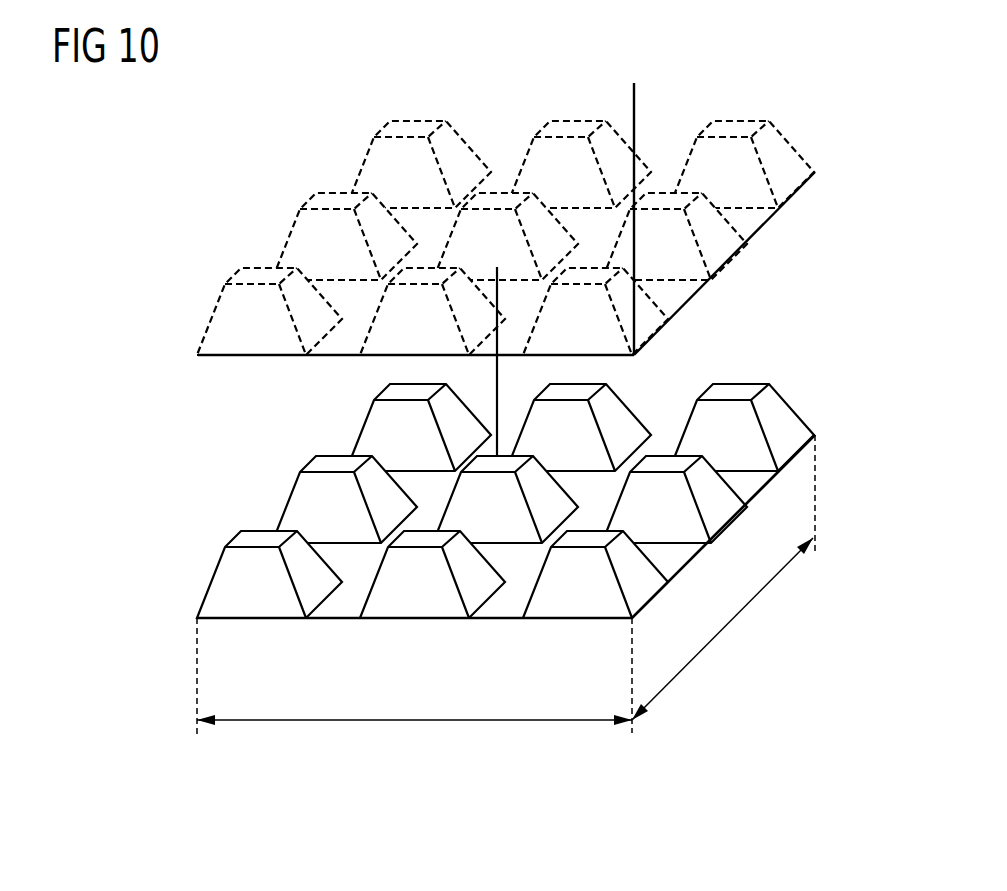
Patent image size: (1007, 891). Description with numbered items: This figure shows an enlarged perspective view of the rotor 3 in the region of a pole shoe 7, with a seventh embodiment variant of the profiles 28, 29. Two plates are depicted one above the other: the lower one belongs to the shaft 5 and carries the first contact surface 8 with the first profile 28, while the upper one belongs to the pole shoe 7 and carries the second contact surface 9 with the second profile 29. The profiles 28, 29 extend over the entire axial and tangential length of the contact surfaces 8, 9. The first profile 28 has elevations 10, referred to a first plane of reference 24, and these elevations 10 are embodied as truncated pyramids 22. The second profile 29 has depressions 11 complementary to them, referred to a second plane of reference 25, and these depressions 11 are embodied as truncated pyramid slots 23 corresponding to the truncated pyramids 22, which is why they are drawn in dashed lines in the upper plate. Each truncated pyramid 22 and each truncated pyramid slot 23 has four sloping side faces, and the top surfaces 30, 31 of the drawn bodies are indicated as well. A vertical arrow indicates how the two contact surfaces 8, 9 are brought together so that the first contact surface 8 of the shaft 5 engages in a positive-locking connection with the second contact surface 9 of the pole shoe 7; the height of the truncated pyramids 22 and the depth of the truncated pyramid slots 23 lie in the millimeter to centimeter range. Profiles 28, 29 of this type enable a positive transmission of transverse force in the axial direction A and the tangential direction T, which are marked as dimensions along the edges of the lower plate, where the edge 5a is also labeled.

The rotor 3 is at (799, 106).
The pole shoe 7 is at (668, 157).
The second contact surface 9 is at (692, 301).
The second plane of reference 25 is at (616, 361).
The second profile 29 is at (682, 258).
The top surface of projection 31 is at (414, 127).
The depressions 11 is at (463, 229).
The truncated pyramid slots 23 is at (228, 318).
The elevations 10 is at (476, 570).
The truncated pyramids 22 is at (226, 585).
The top surface of projection 30 is at (242, 540).
The first profile 28 is at (682, 518).
The first plane of reference 24 is at (693, 563).
The first contact surface 8 is at (763, 490).
The shaft 5 is at (613, 695).
The longitudinal edge 5a is at (605, 652).
The axial direction A is at (414, 735).
The tangential direction T is at (722, 629).